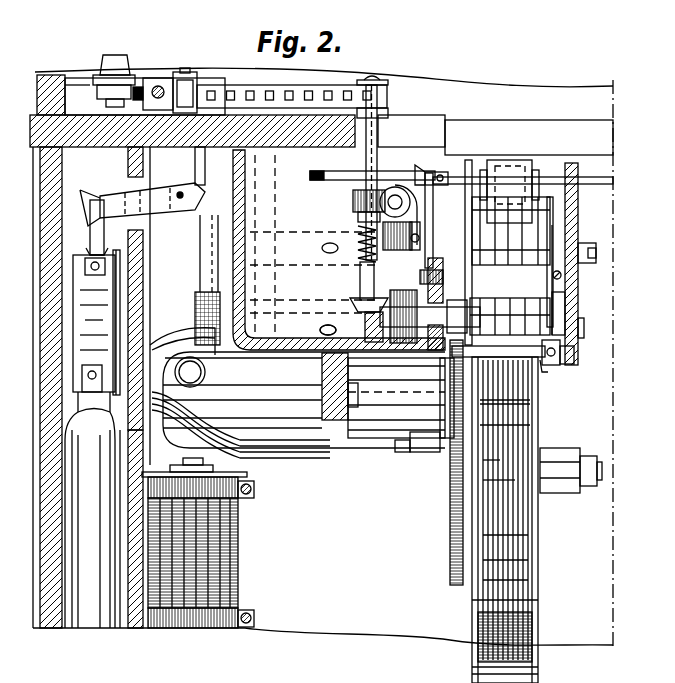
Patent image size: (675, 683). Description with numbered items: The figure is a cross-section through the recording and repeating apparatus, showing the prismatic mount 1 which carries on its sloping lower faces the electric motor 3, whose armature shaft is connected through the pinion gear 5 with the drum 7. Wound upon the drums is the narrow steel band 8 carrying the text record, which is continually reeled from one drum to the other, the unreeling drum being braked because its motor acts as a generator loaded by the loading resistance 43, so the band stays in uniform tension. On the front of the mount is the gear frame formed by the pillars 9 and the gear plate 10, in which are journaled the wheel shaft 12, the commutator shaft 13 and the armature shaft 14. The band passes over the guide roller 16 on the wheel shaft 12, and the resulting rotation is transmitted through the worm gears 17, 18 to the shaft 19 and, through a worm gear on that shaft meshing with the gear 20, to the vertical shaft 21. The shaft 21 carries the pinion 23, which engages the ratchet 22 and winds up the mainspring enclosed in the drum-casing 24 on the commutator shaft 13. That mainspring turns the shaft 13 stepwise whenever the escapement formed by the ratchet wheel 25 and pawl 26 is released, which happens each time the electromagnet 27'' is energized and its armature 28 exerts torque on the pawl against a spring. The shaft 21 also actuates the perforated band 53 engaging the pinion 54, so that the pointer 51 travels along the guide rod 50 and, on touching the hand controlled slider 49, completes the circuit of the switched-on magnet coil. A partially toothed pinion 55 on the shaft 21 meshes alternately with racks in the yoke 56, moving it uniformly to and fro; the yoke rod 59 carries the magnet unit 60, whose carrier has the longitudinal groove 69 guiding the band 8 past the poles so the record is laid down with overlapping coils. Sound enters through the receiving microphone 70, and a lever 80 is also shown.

The prismatic mount 1 is at (339, 250).
The electric motor 3 is at (294, 430).
The pinion gear 5 is at (460, 533).
The drum 7 is at (470, 621).
The steel band 8 is at (505, 556).
The pillars 9 is at (457, 278).
The gear plate 10 is at (572, 274).
The wheel shaft 12 is at (573, 230).
The commutator shaft 13 is at (576, 308).
The armature shaft 14 is at (553, 364).
The guide roller 16 is at (422, 237).
The worm gear 17 is at (412, 224).
The worm gear 18 is at (416, 172).
The shaft 19 is at (403, 190).
The gear 20 is at (352, 206).
The vertical shaft 21 is at (382, 120).
The ratchet 22 is at (360, 275).
The pinion 23 is at (358, 305).
The drum-casing 24 is at (352, 323).
The ratchet wheel 25 is at (577, 335).
The pawl 26 is at (543, 368).
The electromagnet 27'' is at (384, 422).
The armature 28 is at (404, 453).
The loading resistance 43 is at (240, 541).
The hand controlled slider 49 is at (116, 60).
The guide rod 50 is at (168, 88).
The pointer 51 is at (145, 80).
The perforated band 53 is at (320, 93).
The pinion 54 is at (373, 80).
The partially toothed pinion 55 is at (348, 181).
The yoke 56 is at (308, 175).
The yoke rod 59 is at (548, 177).
The magnet unit 60 is at (510, 162).
The longitudinal groove 69 is at (515, 218).
The receiving microphone 70 is at (90, 600).
The lever 80 is at (115, 199).